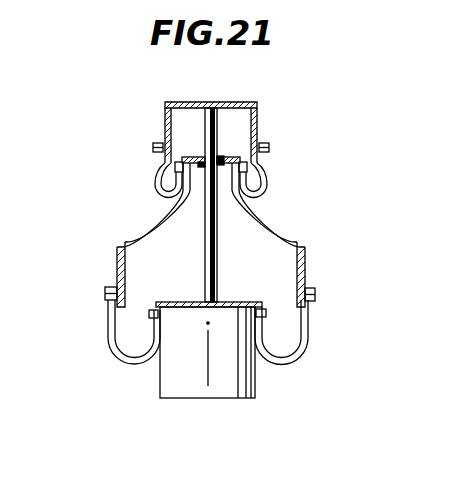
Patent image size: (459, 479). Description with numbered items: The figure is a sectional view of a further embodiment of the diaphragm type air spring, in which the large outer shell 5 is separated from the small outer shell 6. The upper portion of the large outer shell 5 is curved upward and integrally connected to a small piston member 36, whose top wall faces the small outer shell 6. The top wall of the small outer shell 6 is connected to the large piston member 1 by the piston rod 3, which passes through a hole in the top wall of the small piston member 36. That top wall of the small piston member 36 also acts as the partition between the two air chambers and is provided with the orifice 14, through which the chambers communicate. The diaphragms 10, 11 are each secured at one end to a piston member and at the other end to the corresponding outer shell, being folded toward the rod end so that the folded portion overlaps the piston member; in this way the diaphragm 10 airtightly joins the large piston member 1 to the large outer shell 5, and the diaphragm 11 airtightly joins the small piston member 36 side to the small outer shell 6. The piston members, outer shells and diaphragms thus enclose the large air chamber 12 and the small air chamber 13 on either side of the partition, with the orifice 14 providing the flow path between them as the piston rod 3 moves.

The large piston member 1 is at (183, 388).
The piston rod 3 is at (218, 245).
The large outer shell 5 is at (305, 264).
The small outer shell 6 is at (258, 106).
The diaphragm 10 is at (310, 355).
The diaphragm 11 is at (263, 189).
The large air chamber 12 is at (167, 262).
The small air chamber 13 is at (186, 127).
The orifice 14 is at (225, 158).
The small piston member 36 is at (170, 208).